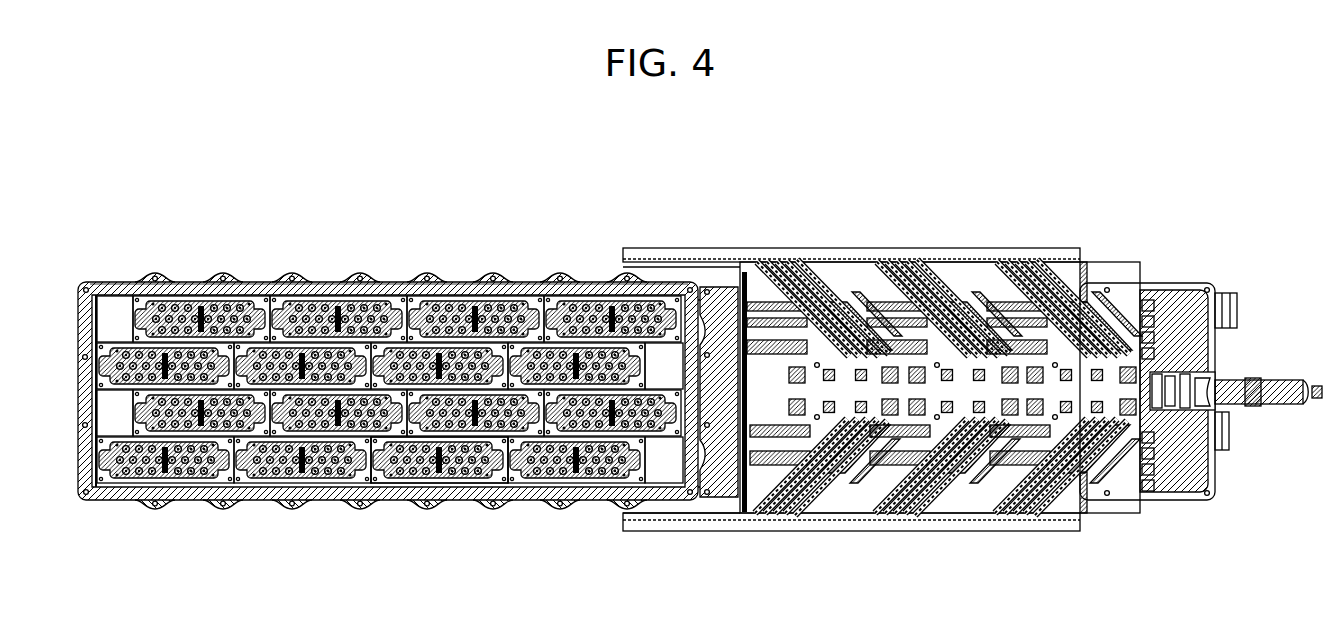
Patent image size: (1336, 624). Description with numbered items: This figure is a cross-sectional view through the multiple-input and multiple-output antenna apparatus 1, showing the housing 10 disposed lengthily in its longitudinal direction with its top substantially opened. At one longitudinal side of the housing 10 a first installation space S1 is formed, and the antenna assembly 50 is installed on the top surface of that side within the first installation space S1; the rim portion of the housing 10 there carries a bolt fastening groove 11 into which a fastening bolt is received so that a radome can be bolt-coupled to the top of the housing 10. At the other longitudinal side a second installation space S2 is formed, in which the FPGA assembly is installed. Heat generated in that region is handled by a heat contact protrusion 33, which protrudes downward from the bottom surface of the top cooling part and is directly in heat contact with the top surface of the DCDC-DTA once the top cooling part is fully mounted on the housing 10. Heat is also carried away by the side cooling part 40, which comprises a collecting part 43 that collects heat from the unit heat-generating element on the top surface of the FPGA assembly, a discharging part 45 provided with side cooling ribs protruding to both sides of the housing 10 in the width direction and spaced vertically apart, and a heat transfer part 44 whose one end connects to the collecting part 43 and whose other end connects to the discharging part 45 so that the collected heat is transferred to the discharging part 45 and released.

The multiple-input and multiple-output antenna apparatus 1 is at (198, 194).
The housing 10 is at (259, 500).
The bolt fastening groove 11 is at (358, 503).
The antenna assembly 50 is at (338, 264).
The first installation space S1 is at (354, 387).
The side cooling part 40 is at (882, 358).
The discharging part 45 is at (705, 249).
The heat transfer part 44 is at (823, 325).
The collecting part 43 is at (860, 322).
The heat contact protrusion 33 is at (916, 416).
The second installation space S2 is at (987, 395).